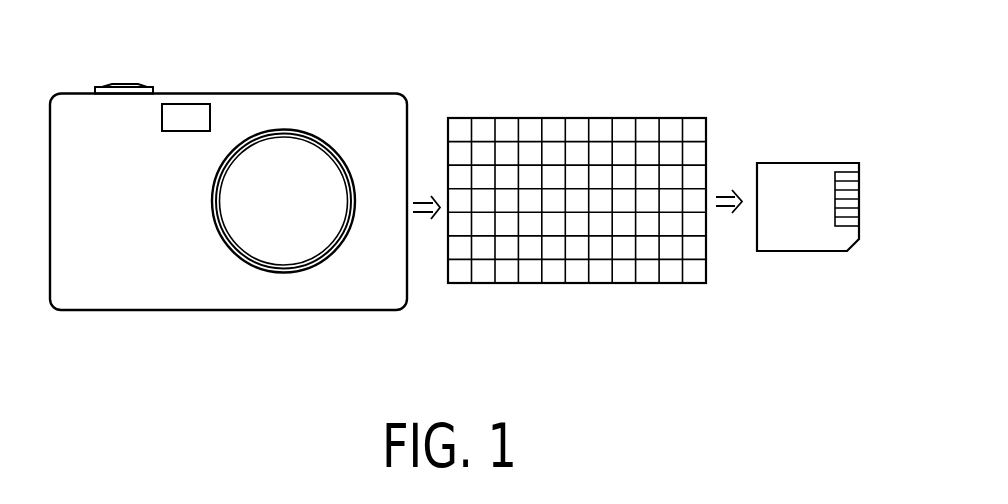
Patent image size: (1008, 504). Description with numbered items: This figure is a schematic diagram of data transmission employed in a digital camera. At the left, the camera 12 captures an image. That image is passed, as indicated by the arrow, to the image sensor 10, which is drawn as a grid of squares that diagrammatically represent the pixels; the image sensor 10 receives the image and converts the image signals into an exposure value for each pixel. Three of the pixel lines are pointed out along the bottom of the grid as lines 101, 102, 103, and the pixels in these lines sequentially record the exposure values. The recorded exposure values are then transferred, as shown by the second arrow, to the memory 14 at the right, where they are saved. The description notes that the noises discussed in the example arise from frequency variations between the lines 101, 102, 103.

The image sensor 10 is at (577, 105).
The camera 12 is at (227, 93).
The memory 14 is at (807, 163).
The line 101 is at (461, 286).
The line 102 is at (486, 286).
The line 103 is at (508, 286).